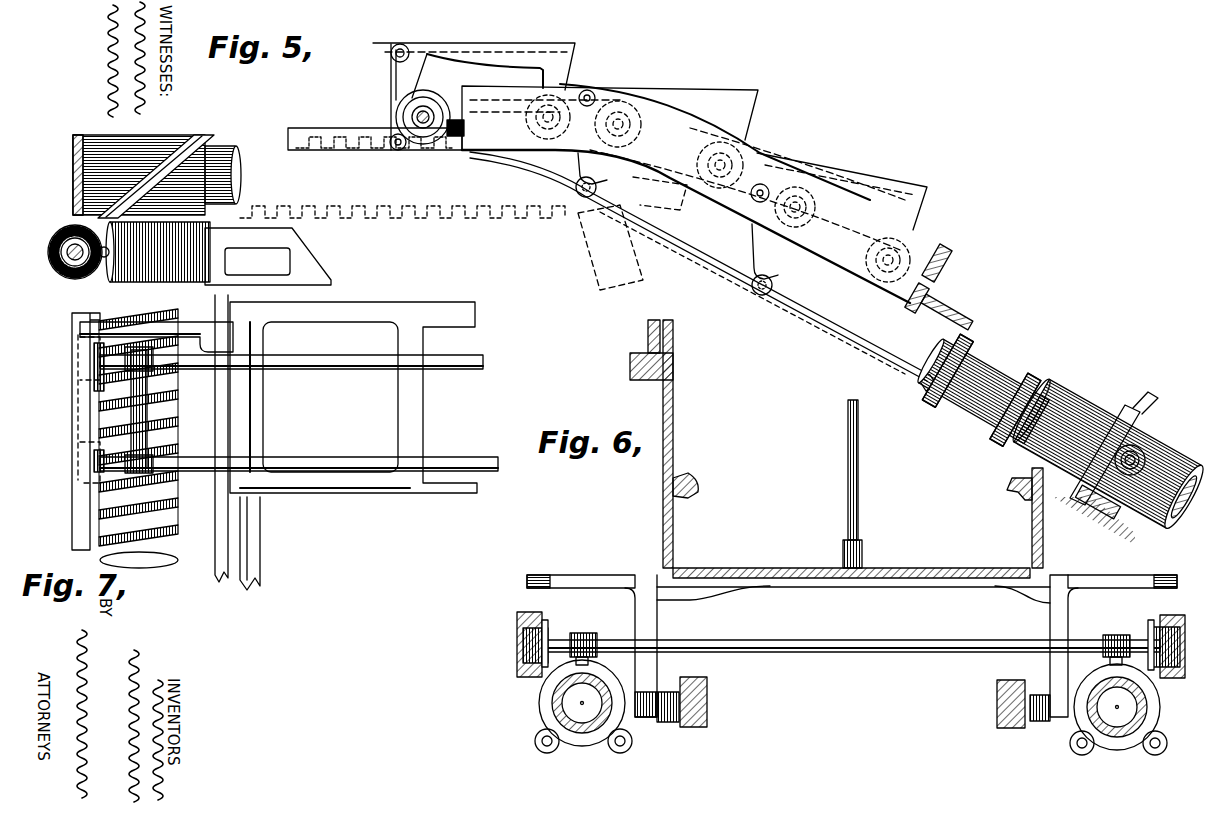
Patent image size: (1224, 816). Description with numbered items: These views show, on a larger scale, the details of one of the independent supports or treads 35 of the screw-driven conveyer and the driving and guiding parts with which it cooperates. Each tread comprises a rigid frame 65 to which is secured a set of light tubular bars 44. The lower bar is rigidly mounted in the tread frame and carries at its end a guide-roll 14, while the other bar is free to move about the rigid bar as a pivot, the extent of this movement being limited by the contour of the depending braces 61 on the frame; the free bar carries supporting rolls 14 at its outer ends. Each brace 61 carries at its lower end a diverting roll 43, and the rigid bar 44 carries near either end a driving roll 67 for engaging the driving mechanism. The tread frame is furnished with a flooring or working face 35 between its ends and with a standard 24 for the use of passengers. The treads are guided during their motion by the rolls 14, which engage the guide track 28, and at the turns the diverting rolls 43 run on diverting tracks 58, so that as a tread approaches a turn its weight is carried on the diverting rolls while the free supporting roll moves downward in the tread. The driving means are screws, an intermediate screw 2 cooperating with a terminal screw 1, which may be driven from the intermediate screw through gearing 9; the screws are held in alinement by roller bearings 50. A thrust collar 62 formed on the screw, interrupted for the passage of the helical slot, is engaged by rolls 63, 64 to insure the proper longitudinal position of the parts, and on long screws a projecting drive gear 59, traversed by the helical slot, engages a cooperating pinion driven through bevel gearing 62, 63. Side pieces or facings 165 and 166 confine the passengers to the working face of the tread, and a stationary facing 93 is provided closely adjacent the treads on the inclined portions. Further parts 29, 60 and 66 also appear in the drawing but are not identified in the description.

In FIG. 7, the terminal screw 1 is at (148, 551).
In FIG. 5, the intermediate screw 2 is at (988, 428).
In FIG. 5, the gearing 9 is at (580, 262).
In FIG. 5, the guide-roll 14 is at (421, 142).
In FIG. 7, the guide-roll 14 is at (95, 360).
In FIG. 6, the guide-roll 14 is at (530, 646).
In FIG. 6, the standard 24 is at (858, 528).
In FIG. 5, the guide track 28 is at (936, 248).
In FIG. 6, the guide track 28 is at (517, 624).
In FIG. 5, the shaft 29 is at (403, 46).
In FIG. 7, the shaft 29 is at (84, 327).
In FIG. 6, the shaft 29 is at (527, 582).
In FIG. 5, the tread 35 is at (490, 44).
In FIG. 6, the tread 35 is at (757, 568).
In FIG. 5, the diverting roll 43 is at (394, 150).
In FIG. 6, the diverting roll 43 is at (660, 719).
In FIG. 5, the bar 44 is at (455, 137).
In FIG. 7, the bar 44 is at (304, 369).
In FIG. 6, the bar 44 is at (800, 653).
In FIG. 6, the roller bearing 50 is at (612, 751).
In FIG. 5, the diverting track 58 is at (322, 152).
In FIG. 7, the diverting track 58 is at (211, 441).
In FIG. 6, the diverting track 58 is at (663, 690).
In FIG. 5, the projecting drive gear 59 is at (136, 172).
In FIG. 5, the cylinder 60 is at (158, 263).
In FIG. 5, the depending brace 61 is at (296, 234).
In FIG. 6, the depending brace 61 is at (657, 623).
In FIG. 5, the thrust collar 62 is at (62, 272).
In FIG. 5, the thrust roll 63 is at (101, 262).
In FIG. 5, the thrust roll 64 is at (1108, 509).
In FIG. 7, the rigid frame 65 is at (355, 481).
In FIG. 6, the rigid frame 65 is at (1012, 595).
In FIG. 7, the block 66 is at (258, 556).
In FIG. 6, the block 66 is at (708, 713).
In FIG. 5, the driving roll 67 is at (528, 165).
In FIG. 7, the driving roll 67 is at (155, 462).
In FIG. 6, the driving roll 67 is at (556, 672).
In FIG. 5, the stationary facing 93 is at (968, 316).
In FIG. 6, the side piece 165 is at (673, 424).
In FIG. 6, the side piece 166 is at (1031, 520).